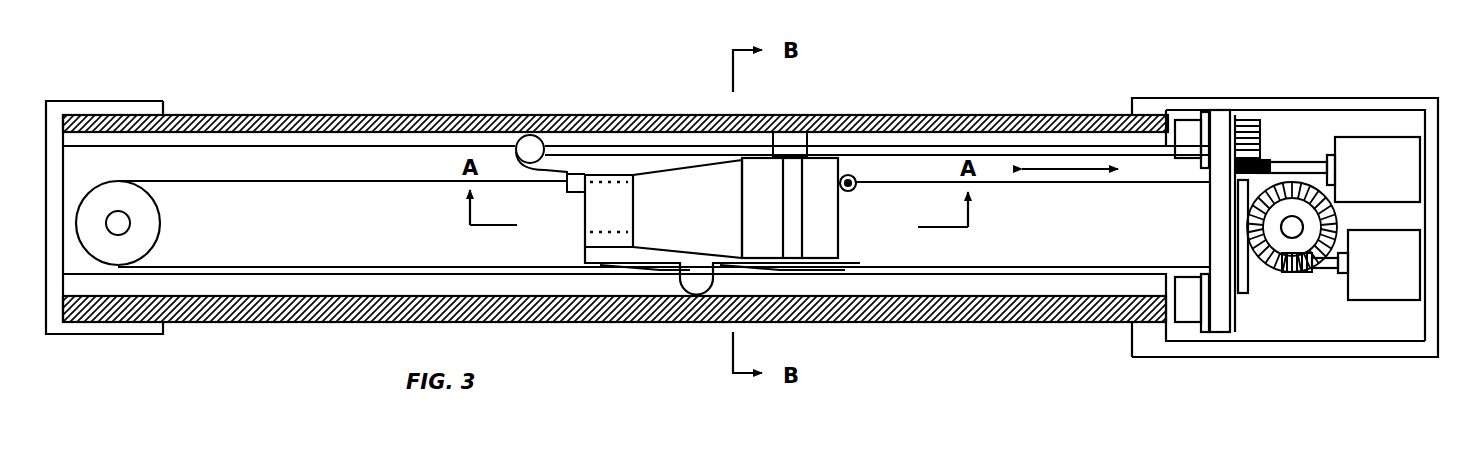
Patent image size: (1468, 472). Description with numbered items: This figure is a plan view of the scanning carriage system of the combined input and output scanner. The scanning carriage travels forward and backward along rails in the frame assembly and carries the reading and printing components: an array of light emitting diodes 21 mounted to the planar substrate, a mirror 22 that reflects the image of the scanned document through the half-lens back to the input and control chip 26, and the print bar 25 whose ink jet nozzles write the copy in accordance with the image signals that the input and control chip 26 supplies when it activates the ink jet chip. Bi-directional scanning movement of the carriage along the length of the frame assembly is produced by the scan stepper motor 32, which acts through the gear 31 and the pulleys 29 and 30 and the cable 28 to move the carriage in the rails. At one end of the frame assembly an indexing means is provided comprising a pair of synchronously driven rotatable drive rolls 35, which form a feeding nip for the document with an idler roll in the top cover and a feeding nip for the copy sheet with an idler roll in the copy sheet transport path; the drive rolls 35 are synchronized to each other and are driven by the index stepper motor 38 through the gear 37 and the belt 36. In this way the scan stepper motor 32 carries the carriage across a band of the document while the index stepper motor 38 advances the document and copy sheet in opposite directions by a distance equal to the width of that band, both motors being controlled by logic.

The array of light emitting diodes 21 is at (828, 208).
The mirror 22 is at (752, 231).
The print bar 25 is at (620, 208).
The input and control chip 26 is at (585, 232).
The cable 28 is at (297, 182).
The pulley 29 is at (162, 224).
The pulley 30 is at (1258, 262).
The gear 31 is at (1337, 219).
The scan stepper motor 32 is at (1375, 301).
The drive rolls 35 is at (1187, 126).
The belt 36 is at (1210, 204).
The gear 37 is at (1232, 113).
The index stepper motor 38 is at (1372, 137).